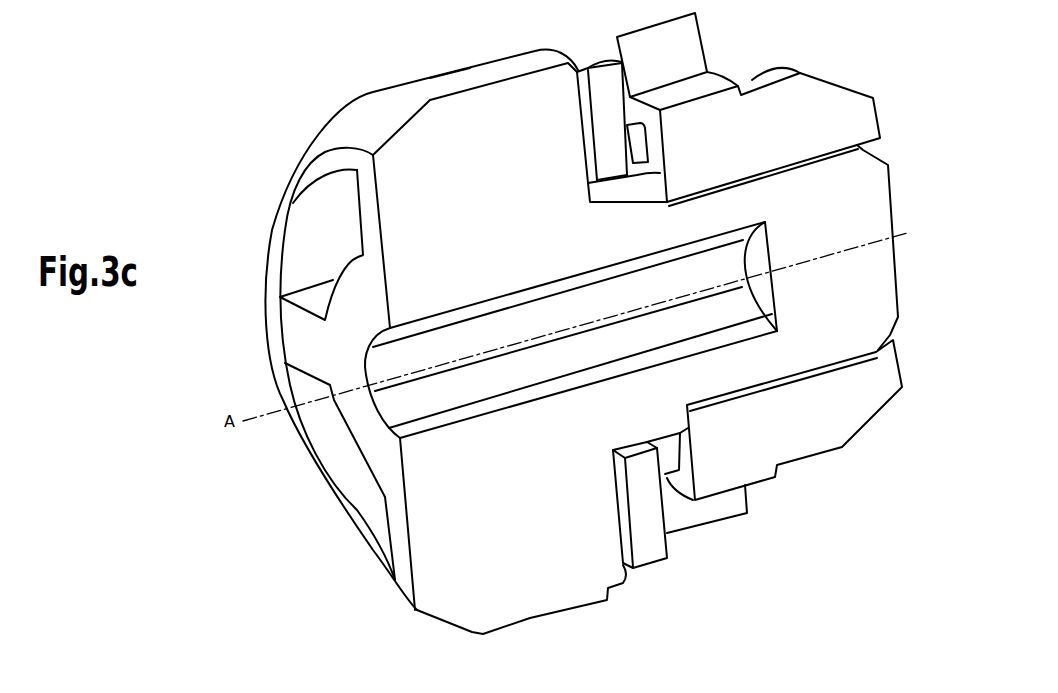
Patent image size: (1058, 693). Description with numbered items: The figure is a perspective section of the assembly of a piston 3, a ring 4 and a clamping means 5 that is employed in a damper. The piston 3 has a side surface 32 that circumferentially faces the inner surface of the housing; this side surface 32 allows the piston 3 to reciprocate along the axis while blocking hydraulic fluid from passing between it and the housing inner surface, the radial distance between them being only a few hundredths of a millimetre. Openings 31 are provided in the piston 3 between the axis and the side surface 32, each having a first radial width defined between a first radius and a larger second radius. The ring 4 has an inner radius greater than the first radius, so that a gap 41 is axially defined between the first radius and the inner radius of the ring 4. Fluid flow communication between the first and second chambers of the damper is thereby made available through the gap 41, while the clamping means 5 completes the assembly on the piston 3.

The piston 3 is at (365, 115).
The openings 31 is at (310, 263).
The side surface 32 is at (457, 80).
The ring 4 is at (607, 110).
The gap 41 is at (640, 452).
The clamping means 5 is at (772, 150).